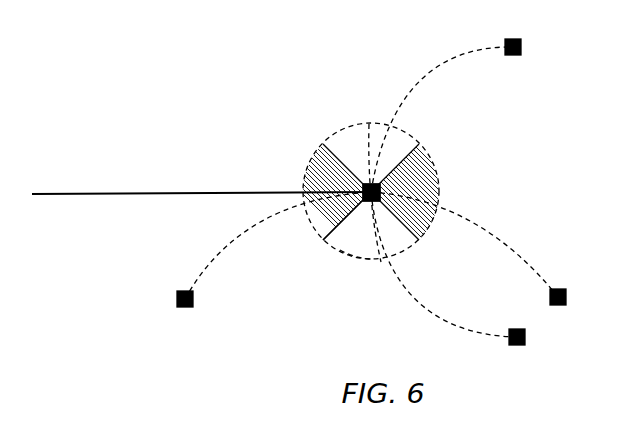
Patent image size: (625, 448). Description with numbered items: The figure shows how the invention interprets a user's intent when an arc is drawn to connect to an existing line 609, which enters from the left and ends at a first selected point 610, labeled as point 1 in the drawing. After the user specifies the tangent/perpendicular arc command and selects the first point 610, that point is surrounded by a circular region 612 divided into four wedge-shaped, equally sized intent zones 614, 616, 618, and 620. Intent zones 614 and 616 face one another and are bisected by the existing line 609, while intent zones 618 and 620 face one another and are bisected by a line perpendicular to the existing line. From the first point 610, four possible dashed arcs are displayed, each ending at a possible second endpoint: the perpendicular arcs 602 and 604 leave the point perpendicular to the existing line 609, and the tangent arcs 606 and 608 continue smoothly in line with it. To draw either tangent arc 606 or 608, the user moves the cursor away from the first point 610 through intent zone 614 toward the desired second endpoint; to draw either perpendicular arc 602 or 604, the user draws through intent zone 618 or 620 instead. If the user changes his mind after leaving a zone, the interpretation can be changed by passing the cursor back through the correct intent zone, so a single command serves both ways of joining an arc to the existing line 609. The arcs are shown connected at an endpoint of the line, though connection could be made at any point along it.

The current pen point 1 is at (371, 235).
The perpendicular arc 602 is at (466, 54).
The perpendicular arc 604 is at (437, 310).
The tangent arc 606 is at (222, 251).
The tangent arc 608 is at (523, 248).
The existing line 609 is at (53, 191).
The first selected point 610 is at (368, 184).
The circular region 612 is at (299, 228).
The intent zone 614 is at (309, 163).
The intent zone 616 is at (438, 163).
The intent zone 618 is at (403, 127).
The intent zone 620 is at (343, 262).